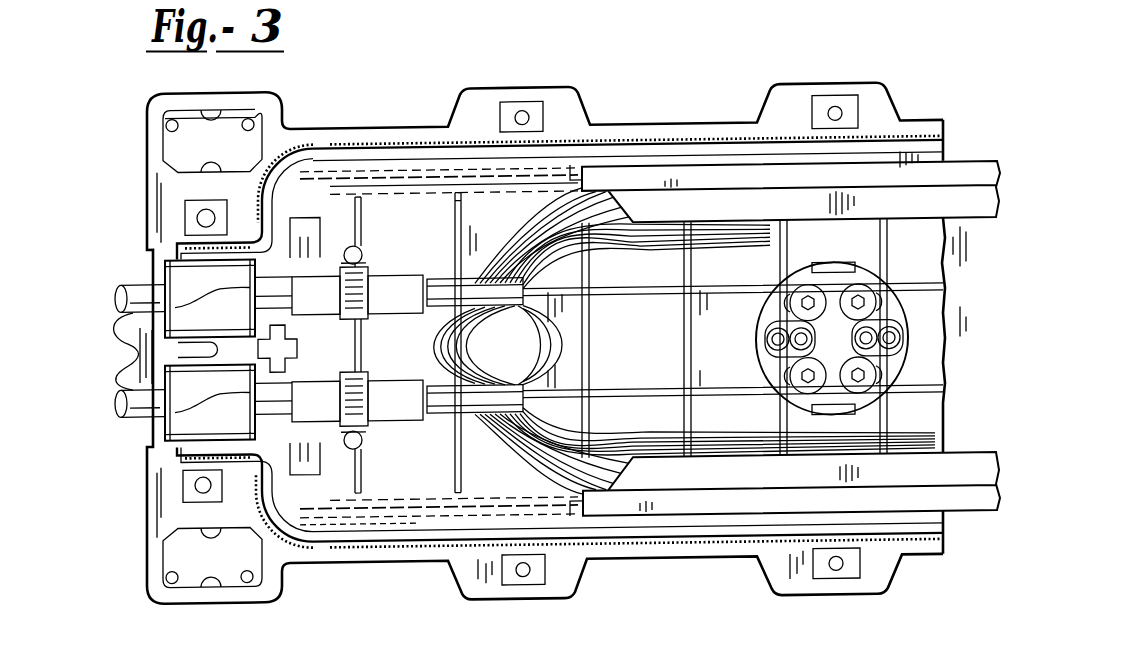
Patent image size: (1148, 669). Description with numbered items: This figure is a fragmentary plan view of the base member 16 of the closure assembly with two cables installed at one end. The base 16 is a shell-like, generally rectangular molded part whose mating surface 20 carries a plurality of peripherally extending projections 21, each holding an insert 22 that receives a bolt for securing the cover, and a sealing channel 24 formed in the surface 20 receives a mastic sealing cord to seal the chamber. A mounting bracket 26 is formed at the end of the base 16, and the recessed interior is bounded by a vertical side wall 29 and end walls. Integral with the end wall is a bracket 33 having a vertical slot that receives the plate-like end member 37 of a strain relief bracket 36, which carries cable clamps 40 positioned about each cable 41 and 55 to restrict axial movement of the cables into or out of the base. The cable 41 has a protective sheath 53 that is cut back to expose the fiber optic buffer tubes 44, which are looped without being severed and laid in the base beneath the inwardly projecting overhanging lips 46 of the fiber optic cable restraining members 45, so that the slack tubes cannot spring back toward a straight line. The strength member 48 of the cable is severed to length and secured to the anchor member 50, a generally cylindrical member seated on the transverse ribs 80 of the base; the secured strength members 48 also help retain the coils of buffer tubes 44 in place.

The base member 16 is at (697, 573).
The surface of the base 20 is at (426, 141).
The peripherally extending projections 21 is at (521, 95).
The insert 22 is at (507, 119).
The sealing channel 24 is at (337, 151).
The mounting bracket 26 is at (118, 353).
The vertical side wall 29 is at (352, 533).
The bracket 33 is at (340, 208).
The strain relief brackets 36 is at (332, 352).
The plate-like end members 37 is at (297, 246).
The cable clamps 40 is at (364, 253).
The cable 41 is at (133, 287).
The fiber optic buffer tubes 44 is at (620, 271).
The fiber optic cable restraining members 45 is at (637, 169).
The overhanging lips 46 is at (953, 233).
The strength member 48 is at (897, 297).
The anchor member 50 is at (913, 323).
The protective sheath 53 is at (445, 280).
The cable 55 is at (132, 420).
The ribs 80 is at (780, 271).